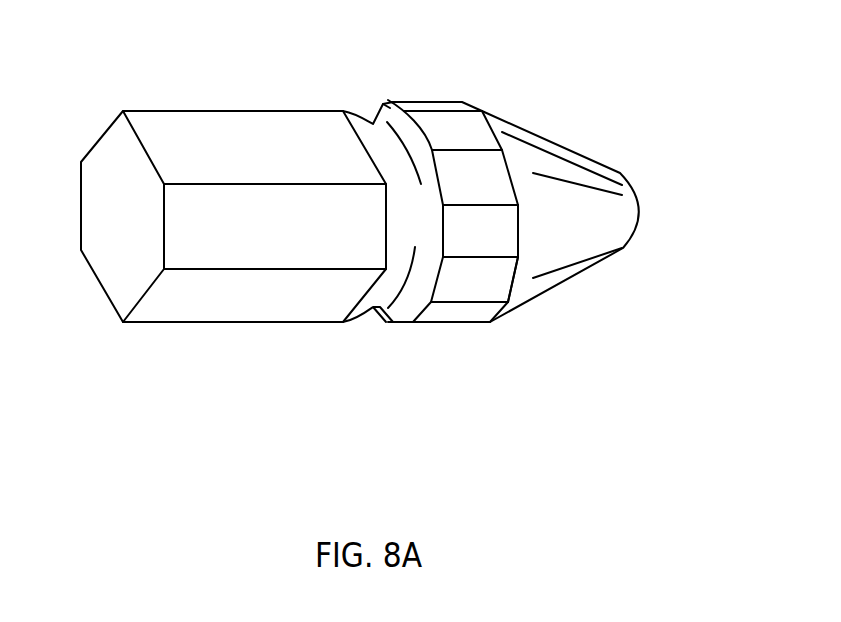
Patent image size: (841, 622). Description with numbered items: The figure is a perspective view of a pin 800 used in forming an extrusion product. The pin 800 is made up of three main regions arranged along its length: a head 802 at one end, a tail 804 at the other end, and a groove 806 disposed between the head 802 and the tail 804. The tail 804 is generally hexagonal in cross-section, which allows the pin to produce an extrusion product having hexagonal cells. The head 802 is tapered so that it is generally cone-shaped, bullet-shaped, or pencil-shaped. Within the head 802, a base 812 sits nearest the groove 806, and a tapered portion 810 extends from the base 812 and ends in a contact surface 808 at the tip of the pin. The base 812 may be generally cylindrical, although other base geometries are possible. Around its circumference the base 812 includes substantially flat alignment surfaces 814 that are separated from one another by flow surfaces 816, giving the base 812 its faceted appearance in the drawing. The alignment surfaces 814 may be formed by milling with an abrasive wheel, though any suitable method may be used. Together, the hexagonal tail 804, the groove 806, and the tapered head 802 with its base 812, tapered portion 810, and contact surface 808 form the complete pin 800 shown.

The pin 800 is at (382, 275).
The head 802 is at (562, 276).
The tail 804 is at (343, 100).
The groove 806 is at (388, 368).
The contact surface 808 is at (612, 286).
The tapered portion 810 is at (570, 250).
The base 812 is at (519, 371).
The alignment surfaces 814 is at (495, 238).
The flow surfaces 816 is at (468, 275).